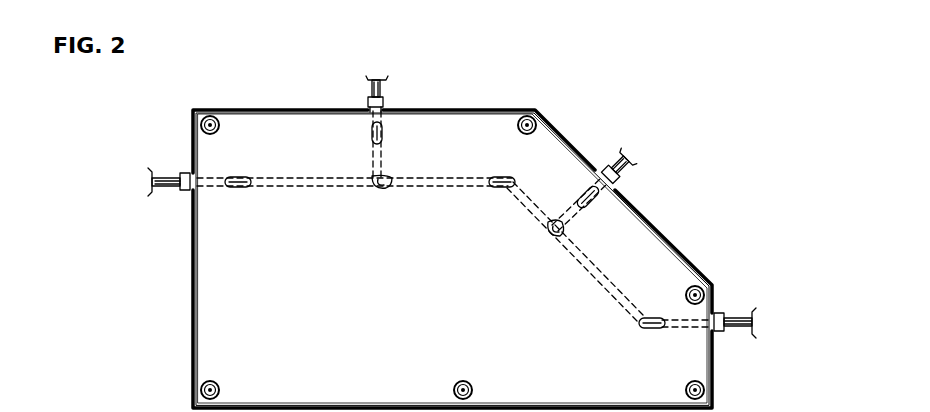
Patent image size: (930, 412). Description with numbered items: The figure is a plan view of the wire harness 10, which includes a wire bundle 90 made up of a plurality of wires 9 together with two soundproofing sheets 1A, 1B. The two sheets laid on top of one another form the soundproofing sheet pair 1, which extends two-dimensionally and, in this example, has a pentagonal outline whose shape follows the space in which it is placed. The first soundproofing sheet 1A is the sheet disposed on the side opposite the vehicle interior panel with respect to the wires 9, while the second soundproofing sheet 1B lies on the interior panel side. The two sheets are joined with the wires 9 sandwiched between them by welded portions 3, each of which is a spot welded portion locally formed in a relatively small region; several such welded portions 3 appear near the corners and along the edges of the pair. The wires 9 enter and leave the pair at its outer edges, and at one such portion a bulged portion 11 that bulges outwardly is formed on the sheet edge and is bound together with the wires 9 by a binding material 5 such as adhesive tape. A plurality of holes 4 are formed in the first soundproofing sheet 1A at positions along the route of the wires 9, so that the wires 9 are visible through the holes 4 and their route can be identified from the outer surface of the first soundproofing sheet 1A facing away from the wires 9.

The soundproofing sheet pair 1 is at (400, 259).
The first soundproofing sheet 1A is at (200, 318).
The second soundproofing sheet 1B is at (192, 268).
The welded portion 3 is at (204, 118).
The hole 4 is at (240, 177).
The binding material 5 is at (384, 91).
The wire 9 is at (181, 176).
The wire harness 10 is at (601, 97).
The bulged portion 11 is at (384, 92).
The wire bundle 90 is at (745, 305).